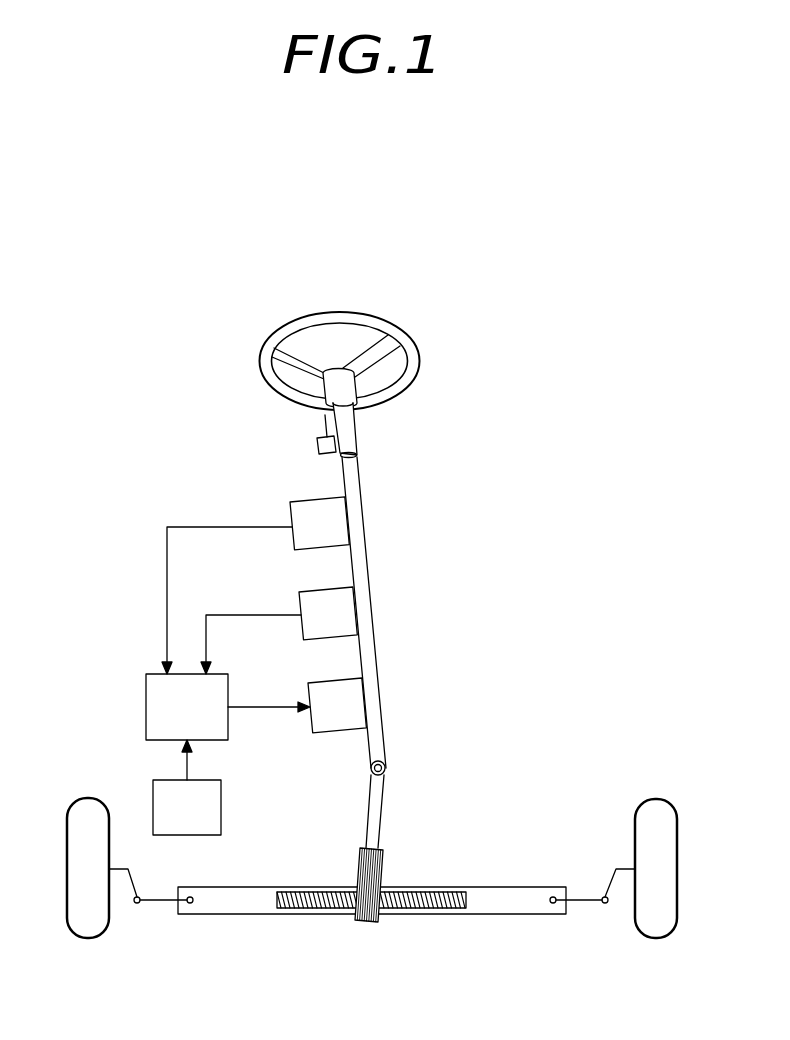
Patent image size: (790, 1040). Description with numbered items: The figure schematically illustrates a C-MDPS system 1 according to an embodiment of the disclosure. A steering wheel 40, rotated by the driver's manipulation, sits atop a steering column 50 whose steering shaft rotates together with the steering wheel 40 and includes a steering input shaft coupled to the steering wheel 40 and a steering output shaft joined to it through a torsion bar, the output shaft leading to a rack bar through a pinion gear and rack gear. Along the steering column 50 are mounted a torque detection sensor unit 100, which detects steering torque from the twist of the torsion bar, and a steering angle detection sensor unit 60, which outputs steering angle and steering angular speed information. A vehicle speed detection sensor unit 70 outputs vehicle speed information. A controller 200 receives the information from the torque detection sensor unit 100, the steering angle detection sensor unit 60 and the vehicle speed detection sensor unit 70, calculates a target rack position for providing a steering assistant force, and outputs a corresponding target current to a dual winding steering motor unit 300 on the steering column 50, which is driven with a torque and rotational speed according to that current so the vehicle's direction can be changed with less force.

The C-MDPS system 1 is at (108, 260).
The steering wheel 40 is at (333, 318).
The steering column 50 is at (352, 512).
The steering angle detection sensor unit 60 is at (342, 612).
The vehicle speed detection sensor unit 70 is at (153, 807).
The torque detection sensor unit 100 is at (308, 507).
The controller 200 is at (146, 707).
The dual winding steering motor unit 300 is at (352, 702).